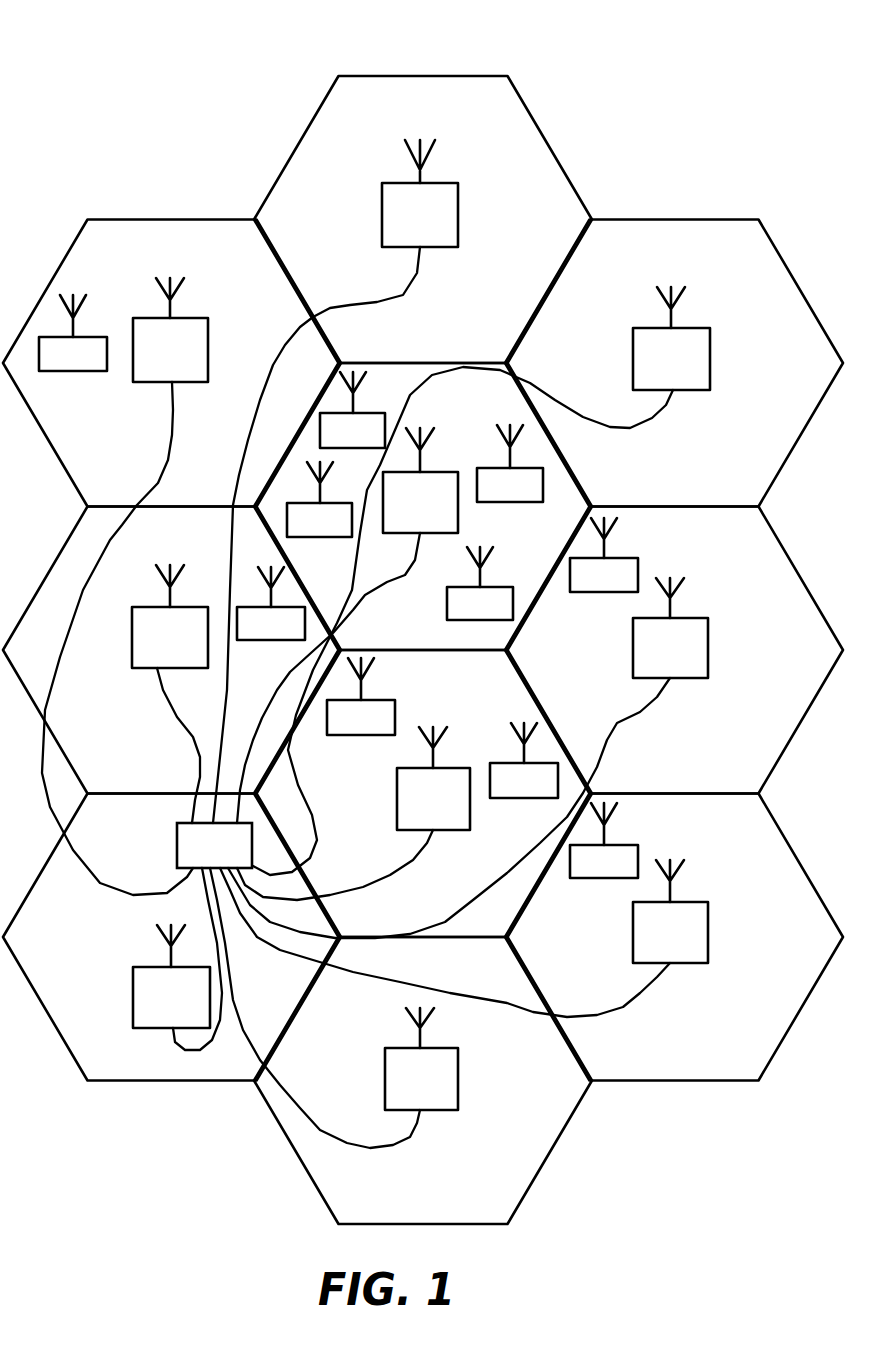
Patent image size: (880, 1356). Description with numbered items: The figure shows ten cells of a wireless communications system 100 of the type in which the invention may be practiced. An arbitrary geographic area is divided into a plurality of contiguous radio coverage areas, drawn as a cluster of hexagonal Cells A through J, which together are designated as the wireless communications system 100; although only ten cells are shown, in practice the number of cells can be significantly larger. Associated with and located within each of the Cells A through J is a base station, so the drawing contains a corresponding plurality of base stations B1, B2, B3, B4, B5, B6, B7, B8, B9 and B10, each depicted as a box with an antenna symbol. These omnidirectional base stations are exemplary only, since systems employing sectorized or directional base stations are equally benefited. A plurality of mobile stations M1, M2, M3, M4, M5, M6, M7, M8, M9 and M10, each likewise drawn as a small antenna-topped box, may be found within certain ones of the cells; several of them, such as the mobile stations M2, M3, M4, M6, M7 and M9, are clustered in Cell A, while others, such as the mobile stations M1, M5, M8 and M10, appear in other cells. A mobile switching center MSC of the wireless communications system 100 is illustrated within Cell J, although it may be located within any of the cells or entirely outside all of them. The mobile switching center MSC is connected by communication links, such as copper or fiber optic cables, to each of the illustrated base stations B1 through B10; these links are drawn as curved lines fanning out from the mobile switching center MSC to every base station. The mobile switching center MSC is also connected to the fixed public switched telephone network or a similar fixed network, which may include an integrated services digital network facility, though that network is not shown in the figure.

The wireless communications system 100 is at (92, 83).
The mobile switching center MSC is at (214, 845).
The base station B1 is at (347, 625).
The base station B2 is at (481, 581).
The base station B3 is at (468, 758).
The base station B4 is at (353, 813).
The base station B5 is at (170, 694).
The base station B6 is at (125, 586).
The base station B7 is at (335, 481).
The base station B8 is at (464, 938).
The base station B9 is at (334, 1008).
The base station B10 is at (177, 959).
The mobile station M1 is at (604, 840).
The mobile station M2 is at (271, 603).
The mobile station M3 is at (319, 499).
The mobile station M4 is at (510, 463).
The mobile station M5 is at (604, 555).
The mobile station M6 is at (352, 410).
The mobile station M7 is at (480, 583).
The mobile station M8 is at (524, 760).
The mobile station M9 is at (361, 696).
The mobile station M10 is at (73, 333).